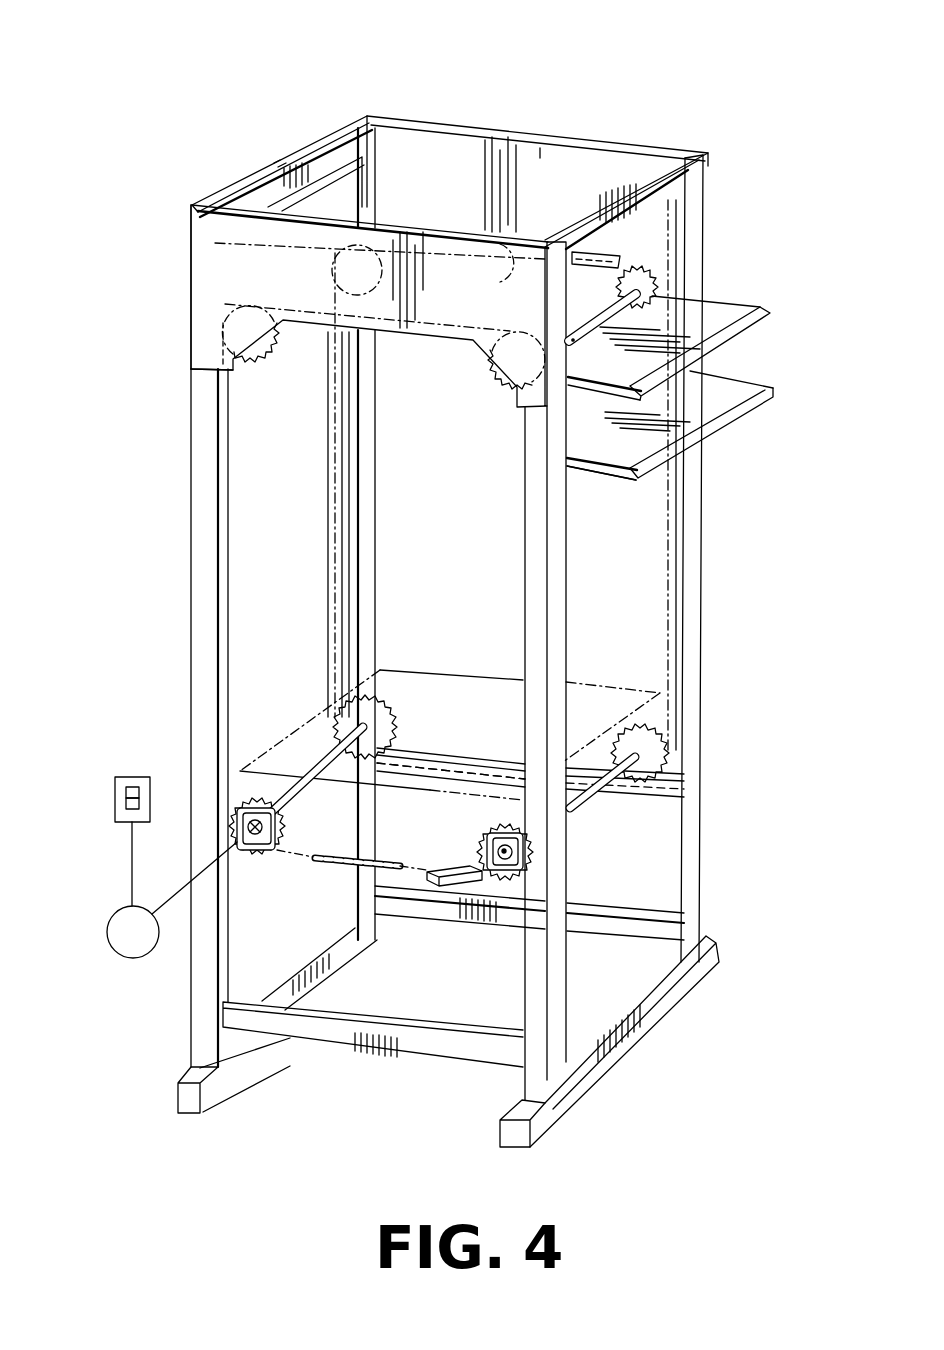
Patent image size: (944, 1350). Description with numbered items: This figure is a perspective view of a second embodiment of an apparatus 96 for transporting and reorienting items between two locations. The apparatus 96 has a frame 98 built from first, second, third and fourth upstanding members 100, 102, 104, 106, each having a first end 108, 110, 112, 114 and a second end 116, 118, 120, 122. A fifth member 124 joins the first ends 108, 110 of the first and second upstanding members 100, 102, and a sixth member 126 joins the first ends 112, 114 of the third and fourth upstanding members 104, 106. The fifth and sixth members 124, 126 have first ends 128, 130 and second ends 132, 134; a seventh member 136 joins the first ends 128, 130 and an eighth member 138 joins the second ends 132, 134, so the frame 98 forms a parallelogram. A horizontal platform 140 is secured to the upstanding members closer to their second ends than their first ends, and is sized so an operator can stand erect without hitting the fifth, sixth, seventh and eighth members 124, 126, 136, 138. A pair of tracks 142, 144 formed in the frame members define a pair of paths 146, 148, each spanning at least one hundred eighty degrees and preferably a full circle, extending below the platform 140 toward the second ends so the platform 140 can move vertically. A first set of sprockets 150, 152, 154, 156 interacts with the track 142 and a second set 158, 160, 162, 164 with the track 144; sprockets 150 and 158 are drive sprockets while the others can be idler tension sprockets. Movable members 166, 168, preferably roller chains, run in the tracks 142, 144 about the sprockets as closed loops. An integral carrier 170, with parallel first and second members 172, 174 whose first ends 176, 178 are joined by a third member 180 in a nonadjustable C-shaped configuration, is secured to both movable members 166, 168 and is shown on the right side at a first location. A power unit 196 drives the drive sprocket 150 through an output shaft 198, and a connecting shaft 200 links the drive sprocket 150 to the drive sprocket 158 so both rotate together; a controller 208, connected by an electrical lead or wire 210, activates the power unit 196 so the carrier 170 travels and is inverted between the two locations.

The apparatus 96 is at (781, 59).
The frame 98 is at (229, 158).
The first upstanding member 100 is at (191, 598).
The second upstanding member 102 is at (525, 620).
The third upstanding member 104 is at (701, 697).
The fourth upstanding member 106 is at (380, 517).
The first end of first upstanding member 108 is at (207, 240).
The first end of second upstanding member 110 is at (498, 528).
The first end of third upstanding member 112 is at (699, 169).
The first end of fourth upstanding member 114 is at (342, 120).
The second end of first upstanding member 116 is at (230, 1075).
The second end of second upstanding member 118 is at (563, 1118).
The second end of third upstanding member 120 is at (697, 982).
The second end of fourth upstanding member 122 is at (377, 943).
The fifth member 124 is at (207, 265).
The sixth member 126 is at (540, 128).
The first end of fifth member 128 is at (240, 214).
The first end of sixth member 130 is at (400, 117).
The second end of fifth member 132 is at (510, 235).
The second end of sixth member 134 is at (648, 140).
The seventh member 136 is at (297, 155).
The eighth member 138 is at (567, 217).
The horizontal platform 140 is at (293, 723).
The track 142 is at (457, 862).
The track 144 is at (413, 750).
The path 146 is at (327, 871).
The path 148 is at (440, 763).
The drive sprocket 150 is at (258, 852).
The sprocket 152 is at (507, 885).
The sprocket 154 is at (503, 373).
The sprocket 156 is at (290, 357).
The drive sprocket 158 is at (390, 705).
The sprocket 160 is at (630, 723).
The sprocket 162 is at (648, 262).
The sprocket 164 is at (336, 257).
The movable member 166 is at (383, 850).
The movable member 168 is at (492, 280).
The integral carrier 170 is at (806, 293).
The first member 172 is at (745, 316).
The second member 174 is at (603, 485).
The first end of first member 176 is at (667, 310).
The first end of second member 178 is at (587, 417).
The third member 180 is at (587, 413).
The power unit 196 is at (140, 960).
The output shaft 198 is at (245, 828).
The connecting shaft 200 is at (303, 797).
The controller 208 is at (140, 777).
The electrical lead or wire 210 is at (132, 880).